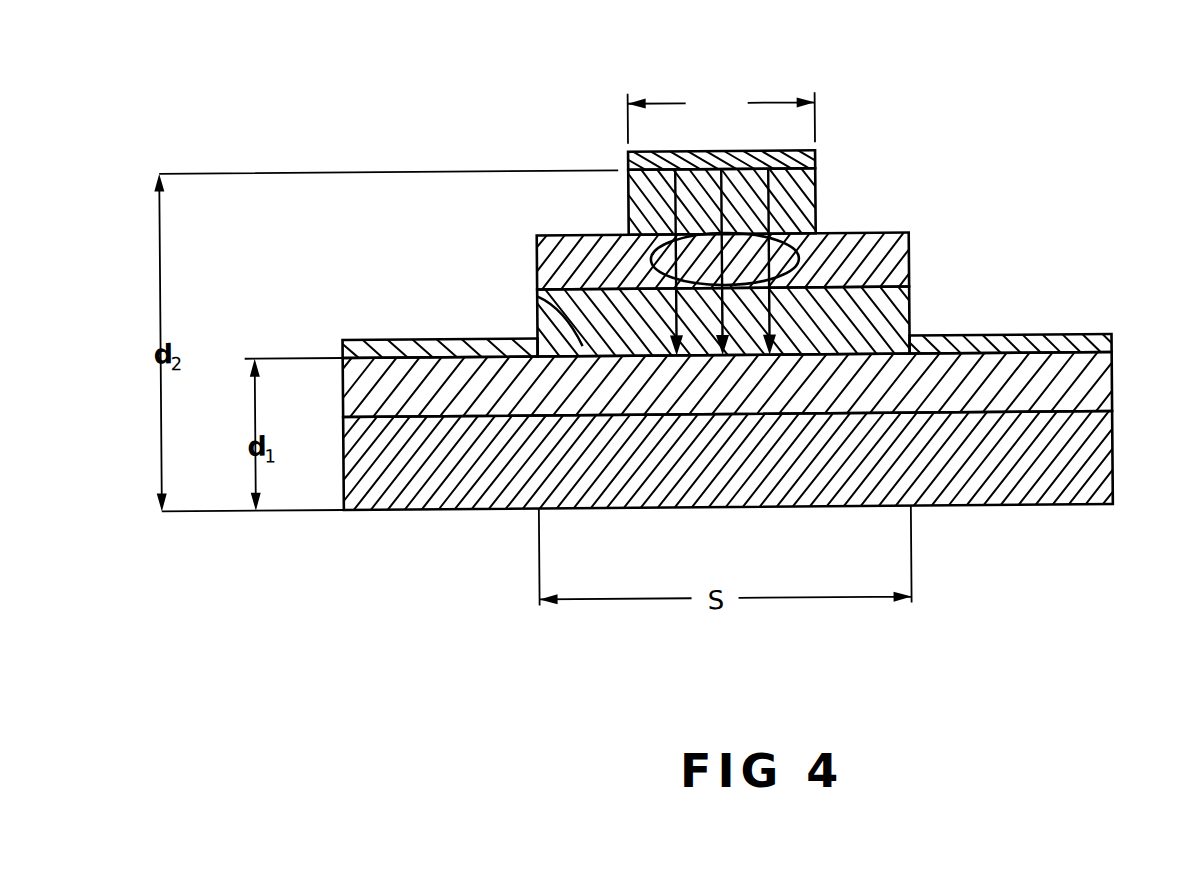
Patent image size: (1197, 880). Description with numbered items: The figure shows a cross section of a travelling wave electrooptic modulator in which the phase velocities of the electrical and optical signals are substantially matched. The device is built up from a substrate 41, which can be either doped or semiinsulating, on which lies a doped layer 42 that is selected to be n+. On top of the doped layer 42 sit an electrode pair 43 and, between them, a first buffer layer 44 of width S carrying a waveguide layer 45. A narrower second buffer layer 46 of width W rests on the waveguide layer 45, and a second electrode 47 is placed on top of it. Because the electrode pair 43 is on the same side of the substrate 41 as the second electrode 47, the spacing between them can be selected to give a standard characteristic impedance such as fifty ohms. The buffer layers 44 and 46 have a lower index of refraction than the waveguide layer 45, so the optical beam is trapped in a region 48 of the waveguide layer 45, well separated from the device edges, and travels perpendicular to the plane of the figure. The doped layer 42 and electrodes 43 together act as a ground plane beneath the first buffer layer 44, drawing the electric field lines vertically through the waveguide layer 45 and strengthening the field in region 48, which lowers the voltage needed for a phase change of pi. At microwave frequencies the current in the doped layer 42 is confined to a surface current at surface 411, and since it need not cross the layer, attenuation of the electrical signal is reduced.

The substrate 41 is at (1108, 466).
The doped layer 42 is at (1106, 386).
The electrode pair 43 is at (428, 340).
The first buffer layer 44 is at (911, 309).
The waveguide layer 45 is at (911, 257).
The second buffer layer 46 is at (803, 207).
The second electrode 47 is at (747, 121).
The region 48 is at (653, 262).
The surface 411 is at (538, 298).